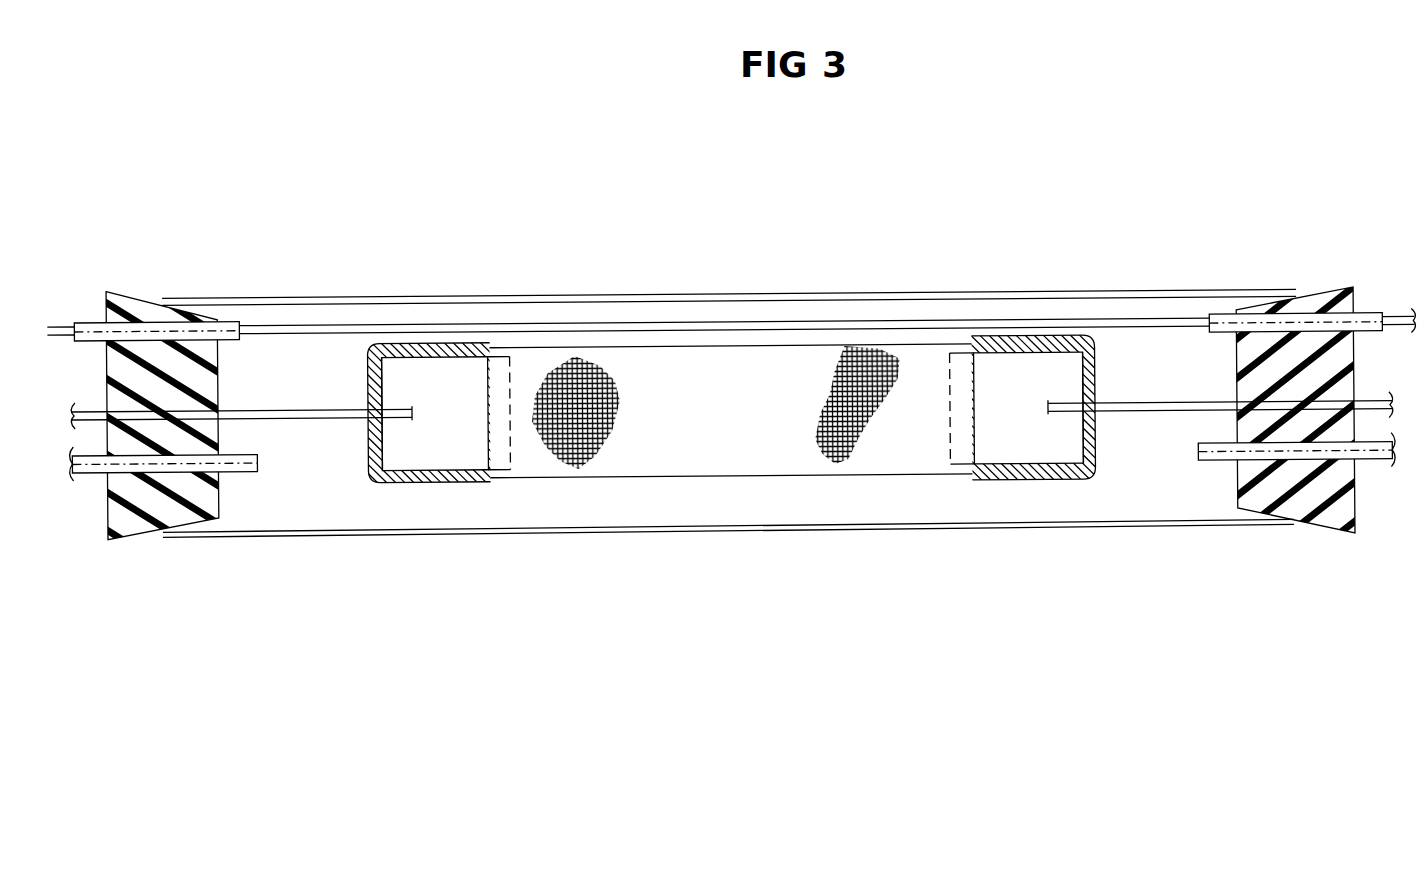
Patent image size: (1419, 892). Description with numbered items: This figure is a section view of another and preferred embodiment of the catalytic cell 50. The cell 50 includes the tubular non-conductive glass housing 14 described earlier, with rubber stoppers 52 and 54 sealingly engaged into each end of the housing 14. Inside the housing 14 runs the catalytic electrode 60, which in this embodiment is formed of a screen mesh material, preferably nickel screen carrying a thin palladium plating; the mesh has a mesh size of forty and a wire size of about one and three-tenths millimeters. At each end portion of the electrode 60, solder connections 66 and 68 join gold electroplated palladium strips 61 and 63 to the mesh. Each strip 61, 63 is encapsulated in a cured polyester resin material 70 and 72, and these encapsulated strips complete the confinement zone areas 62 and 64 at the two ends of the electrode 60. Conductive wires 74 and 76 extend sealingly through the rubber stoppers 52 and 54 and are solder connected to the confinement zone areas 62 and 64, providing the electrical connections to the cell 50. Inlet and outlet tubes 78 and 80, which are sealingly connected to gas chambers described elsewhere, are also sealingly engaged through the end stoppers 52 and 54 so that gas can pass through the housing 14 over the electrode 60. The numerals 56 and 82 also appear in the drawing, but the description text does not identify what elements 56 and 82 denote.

The tubular non-conductive glass housing 14 is at (729, 262).
The catalytic cell 50 is at (812, 287).
The rubber stopper 52 is at (220, 382).
The rubber stopper 54 is at (1316, 298).
The housing bottom wall 56 is at (775, 495).
The catalytic electrode 60 is at (635, 345).
The gold electroplated palladium strip 61 is at (428, 427).
The confinement zone area 62 is at (455, 380).
The gold electroplated palladium strip 63 is at (1030, 343).
The confinement zone area 64 is at (1020, 430).
The solder connection 66 is at (504, 412).
The solder connection 68 is at (965, 408).
The cured polyester resin material 70 is at (420, 341).
The cured polyester resin material 72 is at (1030, 411).
The conductive wire 74 is at (324, 420).
The conductive wire 76 is at (1162, 410).
The inlet tube 78 is at (238, 474).
The outlet tube 80 is at (1222, 462).
The wire 82 is at (697, 325).